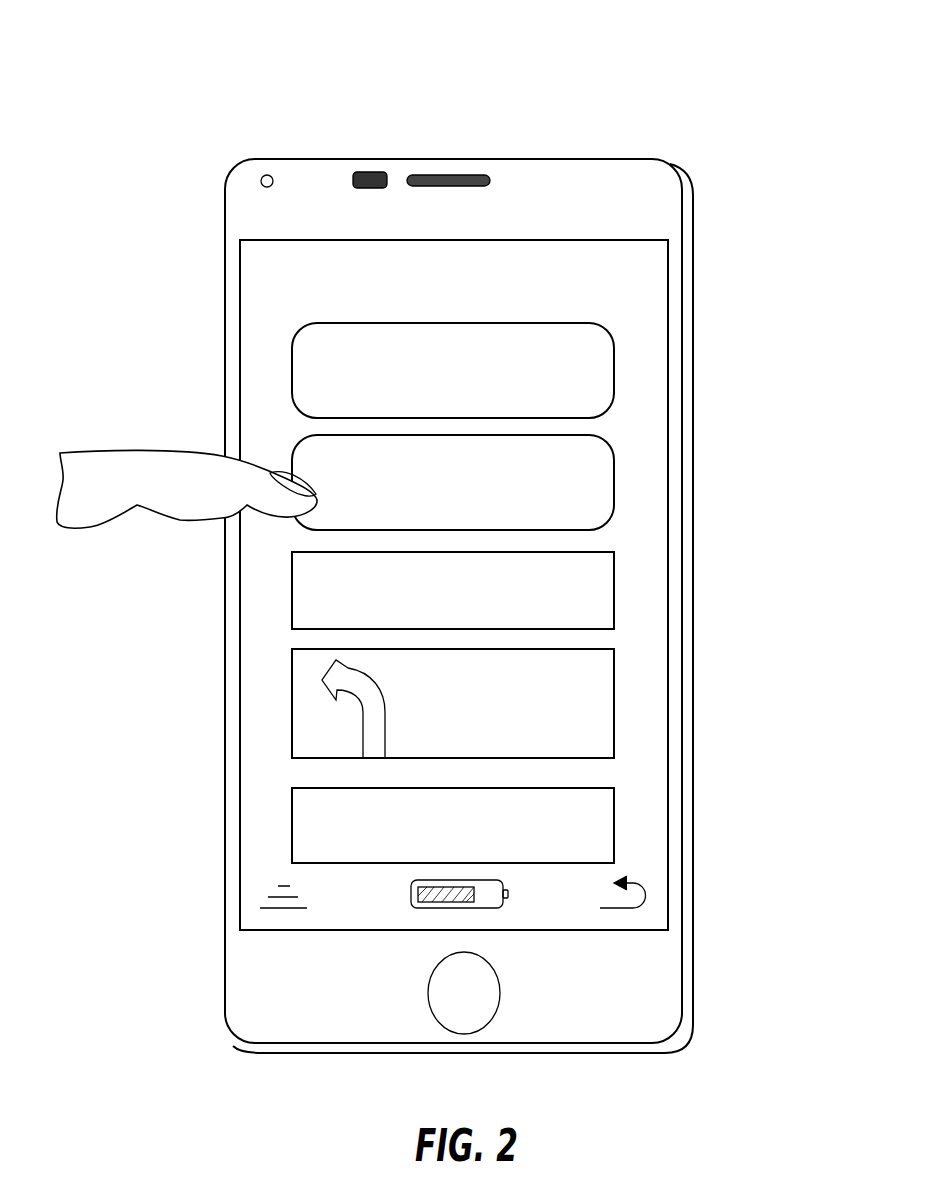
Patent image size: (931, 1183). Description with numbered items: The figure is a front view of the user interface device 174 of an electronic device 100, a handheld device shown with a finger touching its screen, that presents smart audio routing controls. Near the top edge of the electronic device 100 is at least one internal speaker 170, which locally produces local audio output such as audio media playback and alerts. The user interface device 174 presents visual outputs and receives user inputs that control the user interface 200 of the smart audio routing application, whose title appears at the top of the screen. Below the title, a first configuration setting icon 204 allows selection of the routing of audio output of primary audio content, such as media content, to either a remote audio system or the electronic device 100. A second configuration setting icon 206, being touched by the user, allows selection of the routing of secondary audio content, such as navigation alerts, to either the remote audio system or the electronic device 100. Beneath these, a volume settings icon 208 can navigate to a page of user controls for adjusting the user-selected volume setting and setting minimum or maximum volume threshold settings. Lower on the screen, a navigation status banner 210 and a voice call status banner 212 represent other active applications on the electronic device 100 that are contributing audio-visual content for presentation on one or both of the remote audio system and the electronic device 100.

The electronic device 100 is at (224, 182).
The internal speaker 170 is at (450, 175).
The user interface device 174 is at (680, 237).
The user interface 200 is at (605, 250).
The configuration setting icon 204 is at (292, 357).
The configuration setting icon 206 is at (615, 460).
The volume settings icon 208 is at (615, 590).
The navigation status banner 210 is at (615, 676).
The voice call status banner 212 is at (615, 823).